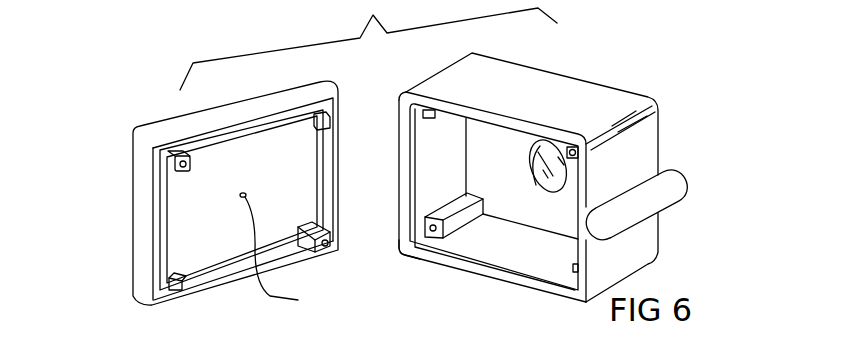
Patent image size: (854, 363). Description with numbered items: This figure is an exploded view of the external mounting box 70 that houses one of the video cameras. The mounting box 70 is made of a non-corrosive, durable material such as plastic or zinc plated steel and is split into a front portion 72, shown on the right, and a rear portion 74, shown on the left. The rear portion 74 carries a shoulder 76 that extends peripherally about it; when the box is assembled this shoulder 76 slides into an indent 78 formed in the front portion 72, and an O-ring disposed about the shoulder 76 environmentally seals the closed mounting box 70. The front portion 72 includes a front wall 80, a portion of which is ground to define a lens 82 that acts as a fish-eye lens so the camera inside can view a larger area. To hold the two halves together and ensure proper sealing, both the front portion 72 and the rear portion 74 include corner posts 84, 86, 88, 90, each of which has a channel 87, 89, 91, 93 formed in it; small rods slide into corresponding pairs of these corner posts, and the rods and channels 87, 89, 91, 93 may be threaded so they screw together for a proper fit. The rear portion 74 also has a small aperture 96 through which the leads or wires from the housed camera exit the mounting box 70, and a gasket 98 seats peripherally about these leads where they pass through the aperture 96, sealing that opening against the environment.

The mounting box 70 is at (128, 114).
The front portion 72 is at (610, 74).
The rear portion 74 is at (128, 303).
The shoulder 76 is at (164, 262).
The indent 78 is at (406, 127).
The front wall 80 is at (480, 148).
The lens 82 is at (542, 180).
The corner post 84 is at (318, 252).
The corner post 86 is at (172, 172).
The channel 87 is at (329, 246).
The corner post 88 is at (402, 254).
The channel 89 is at (176, 164).
The corner post 90 is at (594, 131).
The channel 91 is at (432, 232).
The channel 93 is at (578, 154).
The aperture 96 is at (288, 256).
The gasket 98 is at (240, 194).